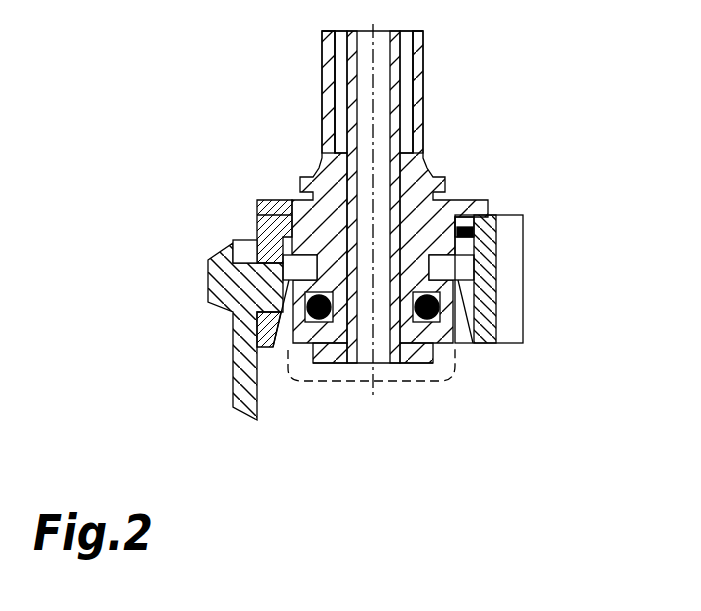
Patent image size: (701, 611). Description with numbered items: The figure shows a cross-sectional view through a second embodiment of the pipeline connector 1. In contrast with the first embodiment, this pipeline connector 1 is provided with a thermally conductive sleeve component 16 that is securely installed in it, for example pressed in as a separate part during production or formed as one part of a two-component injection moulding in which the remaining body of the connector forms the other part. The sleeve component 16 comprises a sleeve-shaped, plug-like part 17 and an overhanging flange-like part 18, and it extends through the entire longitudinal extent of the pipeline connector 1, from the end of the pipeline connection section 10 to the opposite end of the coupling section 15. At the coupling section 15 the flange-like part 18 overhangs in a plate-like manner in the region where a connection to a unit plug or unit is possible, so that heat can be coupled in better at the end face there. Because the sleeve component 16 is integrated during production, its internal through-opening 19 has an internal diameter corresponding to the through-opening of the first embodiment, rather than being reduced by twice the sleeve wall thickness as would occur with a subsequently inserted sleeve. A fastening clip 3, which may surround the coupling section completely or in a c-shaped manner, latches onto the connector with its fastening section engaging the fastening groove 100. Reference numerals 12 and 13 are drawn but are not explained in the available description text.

The pipeline connector 1 is at (262, 64).
The pipeline connection section 10 is at (307, 122).
The outer tube 12 is at (424, 121).
The inner tube 13 is at (405, 148).
The thermally conductive sleeve component 16 is at (410, 66).
The internal through-opening 19 is at (380, 180).
The coupling section 15 is at (286, 234).
The fastening clip 3 is at (222, 281).
The sleeve-shaped, plug-like part 17 is at (496, 232).
The fastening groove 100 is at (497, 244).
The flange-like part 18 is at (456, 357).